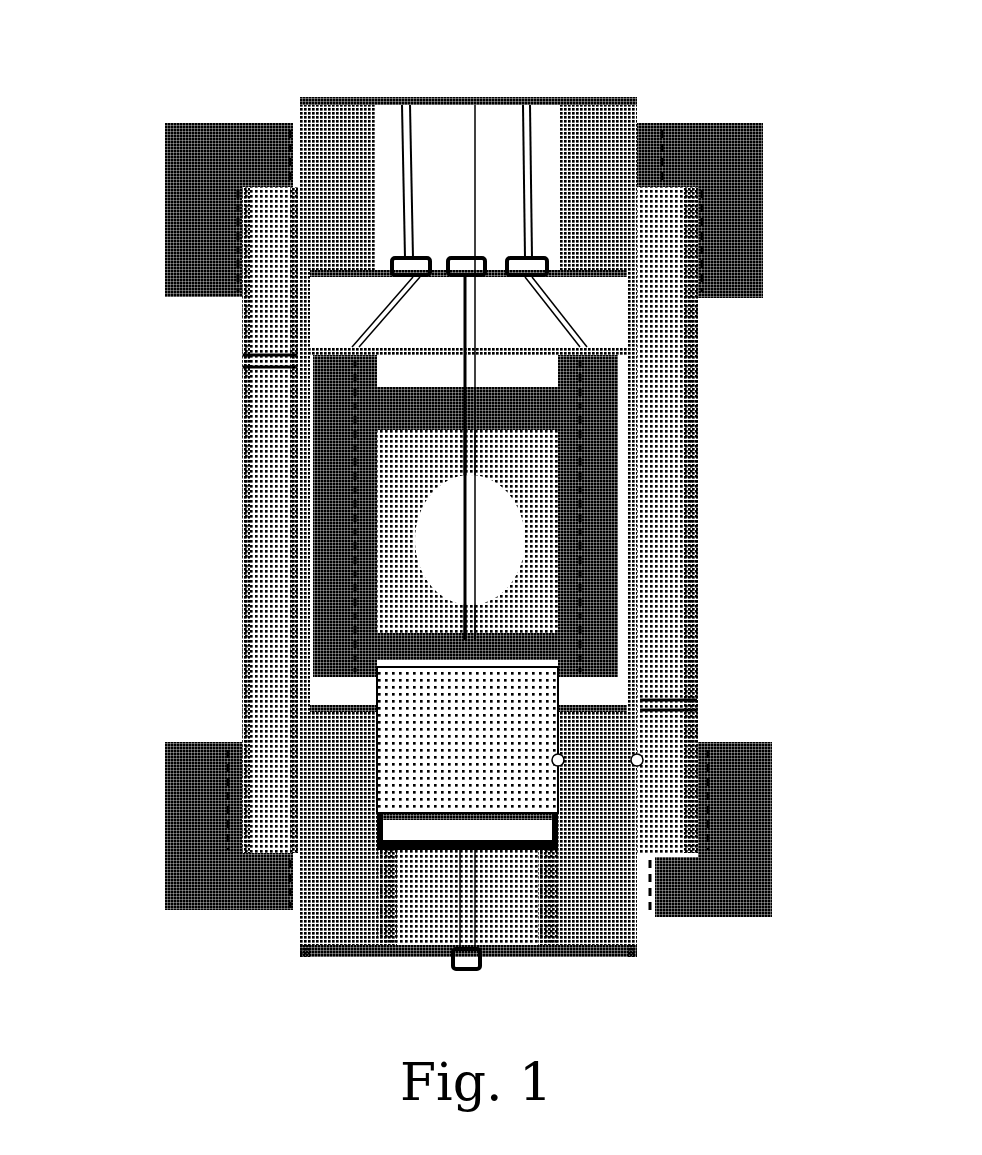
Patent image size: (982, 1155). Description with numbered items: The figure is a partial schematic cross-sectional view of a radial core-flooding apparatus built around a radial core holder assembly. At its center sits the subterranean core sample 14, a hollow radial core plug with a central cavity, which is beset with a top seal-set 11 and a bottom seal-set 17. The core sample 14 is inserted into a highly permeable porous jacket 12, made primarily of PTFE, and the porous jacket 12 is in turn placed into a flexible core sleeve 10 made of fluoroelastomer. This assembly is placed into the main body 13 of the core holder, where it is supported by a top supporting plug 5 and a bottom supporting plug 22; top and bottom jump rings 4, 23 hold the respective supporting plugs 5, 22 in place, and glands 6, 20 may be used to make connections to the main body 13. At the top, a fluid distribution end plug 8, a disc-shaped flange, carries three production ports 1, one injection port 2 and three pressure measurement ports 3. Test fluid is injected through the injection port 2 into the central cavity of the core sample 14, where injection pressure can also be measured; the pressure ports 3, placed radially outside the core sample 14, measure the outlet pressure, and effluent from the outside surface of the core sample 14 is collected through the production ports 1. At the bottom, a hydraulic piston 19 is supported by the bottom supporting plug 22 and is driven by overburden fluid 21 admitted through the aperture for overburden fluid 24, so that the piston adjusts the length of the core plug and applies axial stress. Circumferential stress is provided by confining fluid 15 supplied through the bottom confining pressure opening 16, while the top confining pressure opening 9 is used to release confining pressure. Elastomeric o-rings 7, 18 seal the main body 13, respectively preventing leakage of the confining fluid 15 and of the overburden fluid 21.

The production port 1 is at (402, 93).
The injection port 2 is at (478, 92).
The pressure measurement port 3 is at (535, 95).
The top jump ring 4 is at (283, 118).
The top supporting plug 5 is at (340, 250).
The top gland 6 is at (715, 210).
The elastomeric o-ring 7 is at (305, 313).
The fluid distribution end plug 8 is at (613, 303).
The top confining pressure opening 9 is at (243, 362).
The flexible core sleeve 10 is at (612, 405).
The top seal-set 11 is at (410, 405).
The porous jacket 12 is at (583, 470).
The main body 13 is at (265, 452).
The core sample 14 is at (535, 590).
The confining fluid 15 is at (310, 557).
The bottom confining pressure opening 16 is at (665, 700).
The bottom seal-set 17 is at (410, 638).
The elastomeric o-ring 18 is at (573, 760).
The hydraulic piston 19 is at (432, 795).
The bottom gland 20 is at (735, 777).
The overburden fluid 21 is at (412, 830).
The bottom supporting plug 22 is at (548, 900).
The bottom jump ring 23 is at (283, 930).
The aperture for overburden fluid 24 is at (483, 962).